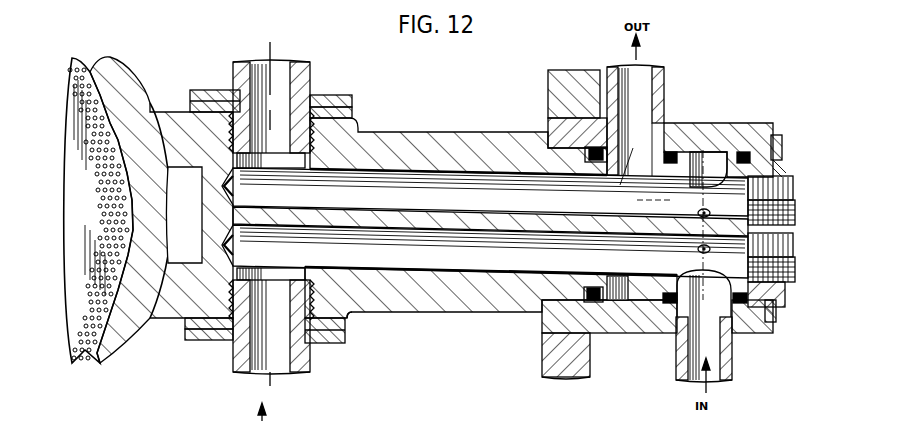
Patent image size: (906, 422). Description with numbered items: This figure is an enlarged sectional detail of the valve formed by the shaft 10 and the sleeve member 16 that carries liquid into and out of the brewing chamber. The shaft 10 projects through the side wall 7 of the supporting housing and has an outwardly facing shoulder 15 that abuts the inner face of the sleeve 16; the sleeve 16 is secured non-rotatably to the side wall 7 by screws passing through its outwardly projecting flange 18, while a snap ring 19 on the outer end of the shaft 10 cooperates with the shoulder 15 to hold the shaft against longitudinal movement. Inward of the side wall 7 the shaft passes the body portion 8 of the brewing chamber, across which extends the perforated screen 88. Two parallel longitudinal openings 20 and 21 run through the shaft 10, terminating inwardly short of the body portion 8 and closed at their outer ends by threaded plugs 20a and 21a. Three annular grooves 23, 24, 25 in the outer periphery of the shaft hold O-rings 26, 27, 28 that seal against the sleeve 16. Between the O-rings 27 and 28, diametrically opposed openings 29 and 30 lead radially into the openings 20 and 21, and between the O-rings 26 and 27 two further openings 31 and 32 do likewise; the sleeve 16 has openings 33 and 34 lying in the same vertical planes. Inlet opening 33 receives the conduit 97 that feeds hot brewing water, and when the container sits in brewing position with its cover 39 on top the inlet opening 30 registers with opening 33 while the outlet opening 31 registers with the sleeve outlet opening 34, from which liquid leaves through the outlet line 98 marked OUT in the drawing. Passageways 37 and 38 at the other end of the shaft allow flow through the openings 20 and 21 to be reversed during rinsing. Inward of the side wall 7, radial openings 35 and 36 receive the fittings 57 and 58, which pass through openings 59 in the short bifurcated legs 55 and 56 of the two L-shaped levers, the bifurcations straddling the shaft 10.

The body portion 8 is at (130, 84).
The screen 88 is at (78, 289).
The openings 59 is at (238, 91).
The short bifurcated leg 56 is at (343, 95).
The short bifurcated leg 55 is at (352, 118).
The fitting 57 is at (308, 70).
The opening 35 is at (310, 153).
The fitting 58 is at (232, 363).
The shaft 10 is at (443, 140).
The opening 36 is at (349, 313).
The longitudinal opening 20 is at (478, 185).
The longitudinal opening 21 is at (462, 260).
The side wall 7 is at (552, 88).
The shoulder 15 is at (547, 116).
The O-ring 26 is at (588, 155).
The flange 18 is at (594, 68).
The outlet opening 31 is at (663, 108).
The outlet passage 98 is at (647, 72).
The outlet opening 34 is at (640, 179).
The sleeve member 16 is at (712, 130).
The O-ring 27 is at (673, 150).
The O-ring 28 is at (748, 150).
The opening 29 is at (717, 165).
The snap ring 19 is at (782, 143).
The plug 20a is at (795, 207).
The plug 21a is at (792, 262).
The passageway 38 is at (698, 212).
The passageway 37 is at (698, 249).
The opening 32 is at (630, 292).
The annular groove 23 is at (593, 303).
The annular groove 24 is at (669, 305).
The annular groove 25 is at (741, 306).
The inlet opening 30 is at (705, 318).
The conduit 97 is at (688, 379).
The inlet opening 33 is at (732, 380).
The cover 39 is at (299, 412).